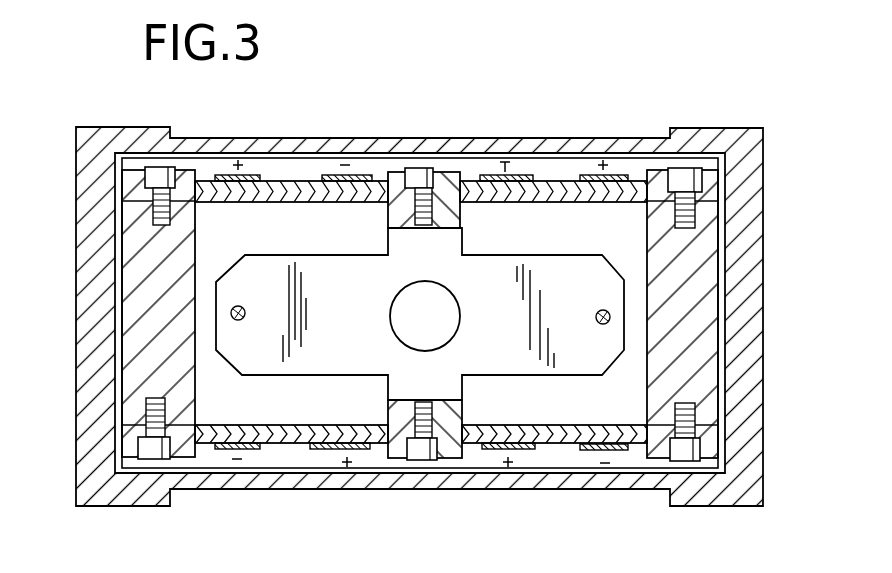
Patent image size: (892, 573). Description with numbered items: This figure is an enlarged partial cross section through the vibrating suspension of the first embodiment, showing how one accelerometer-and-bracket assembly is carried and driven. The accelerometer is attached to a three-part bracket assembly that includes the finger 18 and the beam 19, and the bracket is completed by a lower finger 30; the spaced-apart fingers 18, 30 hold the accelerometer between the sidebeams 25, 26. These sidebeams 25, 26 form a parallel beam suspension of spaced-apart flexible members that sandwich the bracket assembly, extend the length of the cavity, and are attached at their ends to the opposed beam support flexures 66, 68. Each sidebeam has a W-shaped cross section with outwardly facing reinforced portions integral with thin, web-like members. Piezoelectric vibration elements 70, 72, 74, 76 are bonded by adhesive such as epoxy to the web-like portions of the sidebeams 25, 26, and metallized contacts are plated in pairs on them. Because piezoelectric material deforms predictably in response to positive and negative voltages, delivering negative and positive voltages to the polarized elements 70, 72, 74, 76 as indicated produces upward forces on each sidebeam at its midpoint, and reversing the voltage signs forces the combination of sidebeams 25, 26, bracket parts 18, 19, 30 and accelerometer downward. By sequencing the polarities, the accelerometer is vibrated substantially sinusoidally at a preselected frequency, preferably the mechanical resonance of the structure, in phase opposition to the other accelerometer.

The finger 18 is at (400, 172).
The beam 19 is at (565, 257).
The sidebeam 25 is at (463, 186).
The sidebeam 26 is at (470, 438).
The lower finger 30 is at (400, 431).
The beam support flexure 66 is at (713, 322).
The beam support flexure 68 is at (132, 303).
The piezoelectric vibration element 70 is at (564, 181).
The piezoelectric vibration element 72 is at (297, 180).
The piezoelectric vibration element 74 is at (563, 452).
The piezoelectric vibration element 76 is at (288, 449).